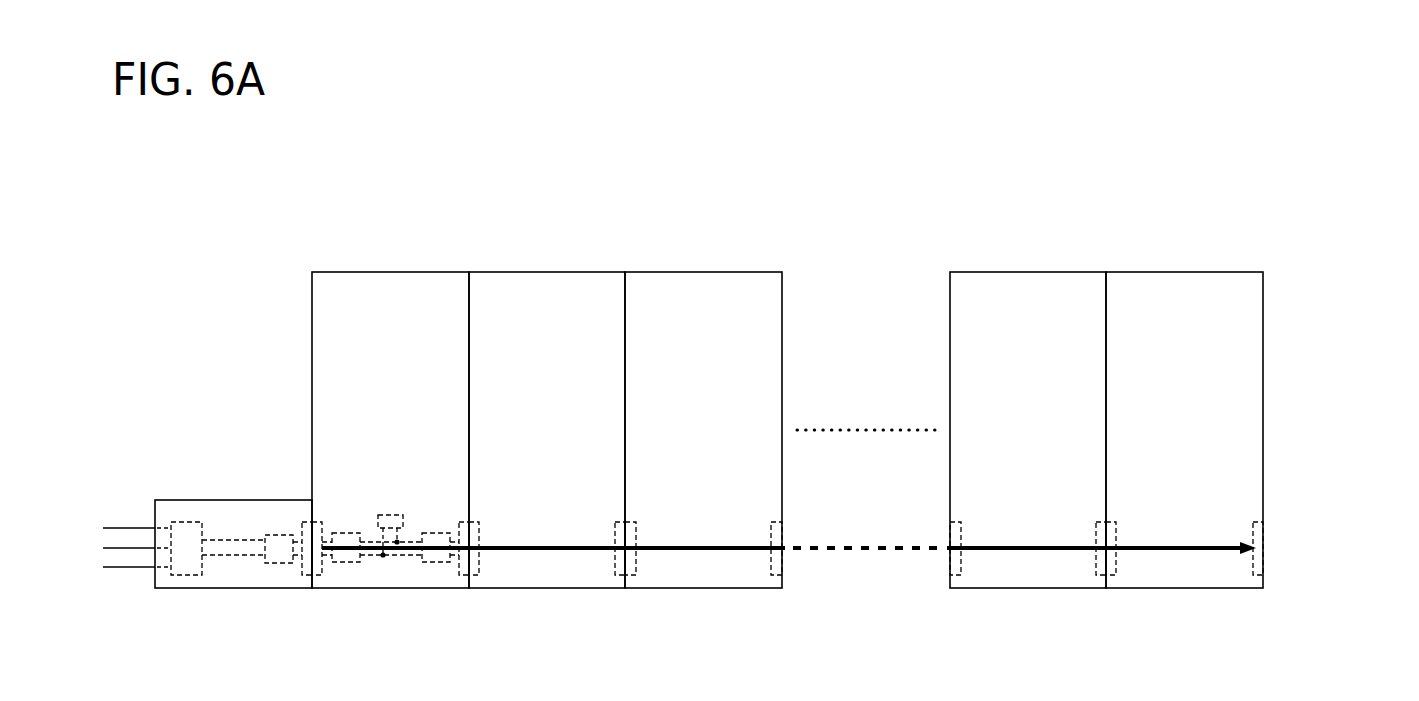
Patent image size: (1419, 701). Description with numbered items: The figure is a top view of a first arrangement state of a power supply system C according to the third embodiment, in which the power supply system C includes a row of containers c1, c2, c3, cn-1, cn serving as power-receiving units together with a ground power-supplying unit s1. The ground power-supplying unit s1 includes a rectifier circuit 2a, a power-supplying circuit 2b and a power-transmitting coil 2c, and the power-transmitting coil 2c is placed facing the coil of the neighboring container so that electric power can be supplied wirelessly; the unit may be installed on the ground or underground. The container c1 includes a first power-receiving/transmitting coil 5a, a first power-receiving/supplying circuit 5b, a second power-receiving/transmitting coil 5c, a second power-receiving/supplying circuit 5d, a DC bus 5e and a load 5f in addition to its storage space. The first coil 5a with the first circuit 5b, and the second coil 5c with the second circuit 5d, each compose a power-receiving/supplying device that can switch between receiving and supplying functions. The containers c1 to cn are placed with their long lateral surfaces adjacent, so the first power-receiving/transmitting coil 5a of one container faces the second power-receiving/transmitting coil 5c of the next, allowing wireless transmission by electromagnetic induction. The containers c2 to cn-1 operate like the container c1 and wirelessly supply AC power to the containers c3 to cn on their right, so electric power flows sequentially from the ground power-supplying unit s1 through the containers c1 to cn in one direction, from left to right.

The ground power-supplying unit s1 is at (223, 500).
The rectifier circuit 2a is at (182, 522).
The power-supplying circuit 2b is at (275, 535).
The power-transmitting coil 2c is at (305, 522).
The container c1 is at (373, 272).
The container c2 is at (529, 272).
The container c3 is at (685, 272).
The container cn-1 is at (1009, 272).
The container cn is at (1165, 272).
The first power-receiving/transmitting coil 5a is at (325, 527).
The first power-receiving/supplying circuit 5b is at (344, 533).
The second power-receiving/transmitting coil 5c is at (465, 524).
The second power-receiving/supplying circuit 5d is at (428, 533).
The DC bus 5e is at (374, 540).
The load 5f is at (394, 515).
The power supply system C is at (1308, 283).